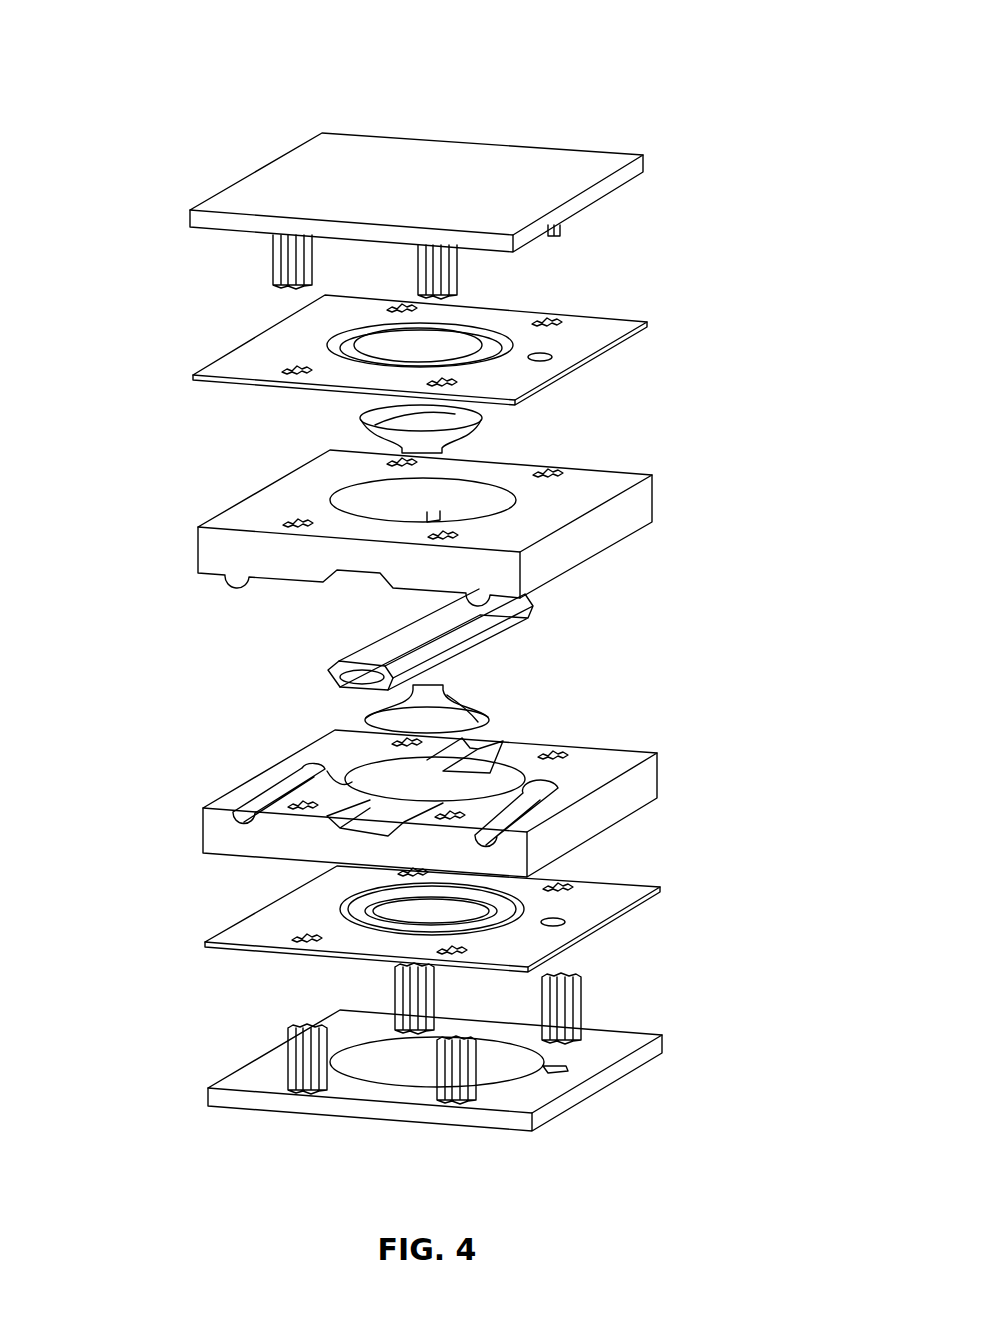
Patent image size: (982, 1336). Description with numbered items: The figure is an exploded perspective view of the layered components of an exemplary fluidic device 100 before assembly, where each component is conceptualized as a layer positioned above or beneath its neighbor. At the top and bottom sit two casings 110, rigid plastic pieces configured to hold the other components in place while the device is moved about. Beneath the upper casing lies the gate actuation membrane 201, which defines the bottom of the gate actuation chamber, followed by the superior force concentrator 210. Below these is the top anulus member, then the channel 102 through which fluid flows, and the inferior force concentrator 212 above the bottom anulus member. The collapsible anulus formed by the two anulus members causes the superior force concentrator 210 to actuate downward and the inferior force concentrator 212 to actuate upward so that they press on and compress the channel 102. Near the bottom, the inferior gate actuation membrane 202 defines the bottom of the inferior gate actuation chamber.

The fluidic device 100 is at (203, 51).
The casing 110 is at (186, 231).
The gate actuation membrane 201 is at (600, 316).
The superior force concentrator 210 is at (362, 408).
The channel 102 is at (328, 670).
The inferior force concentrator 212 is at (458, 707).
The inferior gate actuation membrane 202 is at (658, 892).